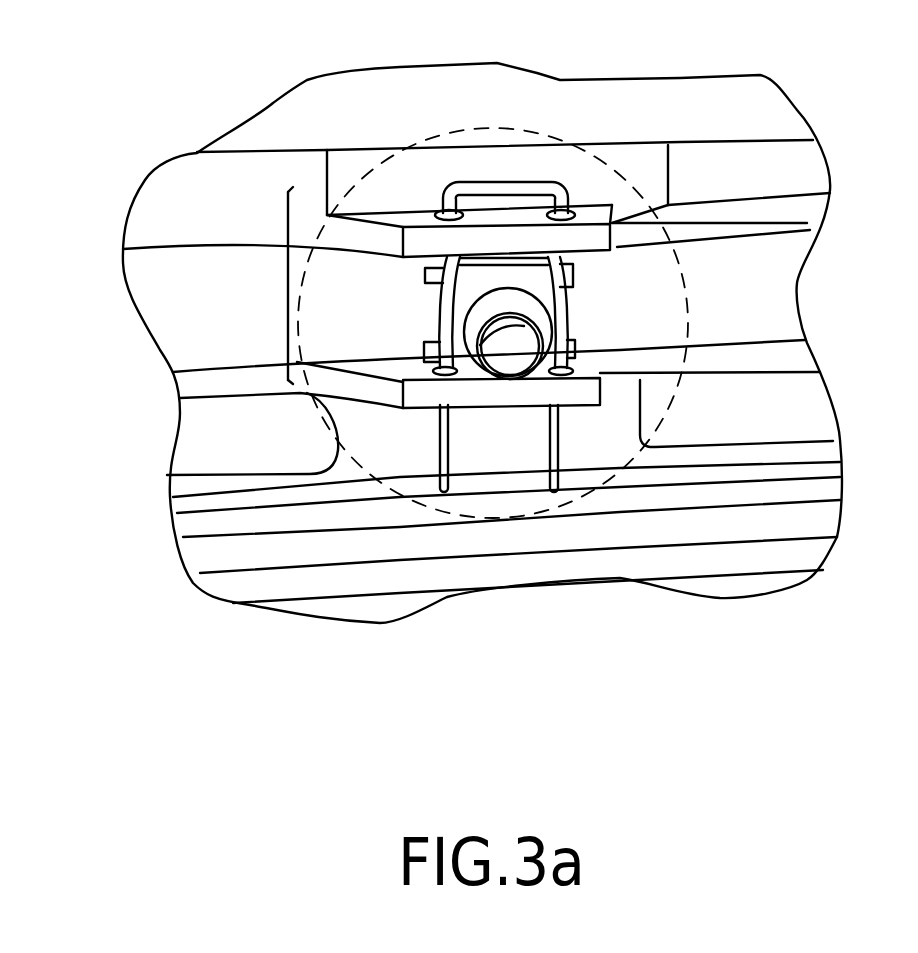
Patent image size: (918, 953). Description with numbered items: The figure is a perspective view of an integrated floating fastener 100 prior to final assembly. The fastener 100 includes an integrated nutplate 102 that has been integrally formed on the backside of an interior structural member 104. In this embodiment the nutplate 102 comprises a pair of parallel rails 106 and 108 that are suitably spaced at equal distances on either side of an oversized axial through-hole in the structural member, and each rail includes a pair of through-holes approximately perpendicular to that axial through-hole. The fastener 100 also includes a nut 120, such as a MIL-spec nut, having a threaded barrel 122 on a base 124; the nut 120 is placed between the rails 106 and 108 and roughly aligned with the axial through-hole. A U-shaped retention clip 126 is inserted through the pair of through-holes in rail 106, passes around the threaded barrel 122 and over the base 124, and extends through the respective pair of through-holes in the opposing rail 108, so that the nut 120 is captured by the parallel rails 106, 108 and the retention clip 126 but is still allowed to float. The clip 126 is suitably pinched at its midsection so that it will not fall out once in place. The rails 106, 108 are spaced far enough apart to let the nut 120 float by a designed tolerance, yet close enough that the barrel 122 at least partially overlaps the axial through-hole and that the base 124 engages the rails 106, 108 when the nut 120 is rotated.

The integrated floating fastener 100 is at (352, 160).
The integrated nutplate 102 is at (288, 283).
The interior structural member 104 is at (158, 304).
The rail 106 is at (622, 248).
The rail 108 is at (619, 391).
The nut 120 is at (460, 386).
The threaded barrel 122 is at (513, 300).
The base 124 is at (443, 280).
The U-shaped retention clip 126 is at (537, 187).